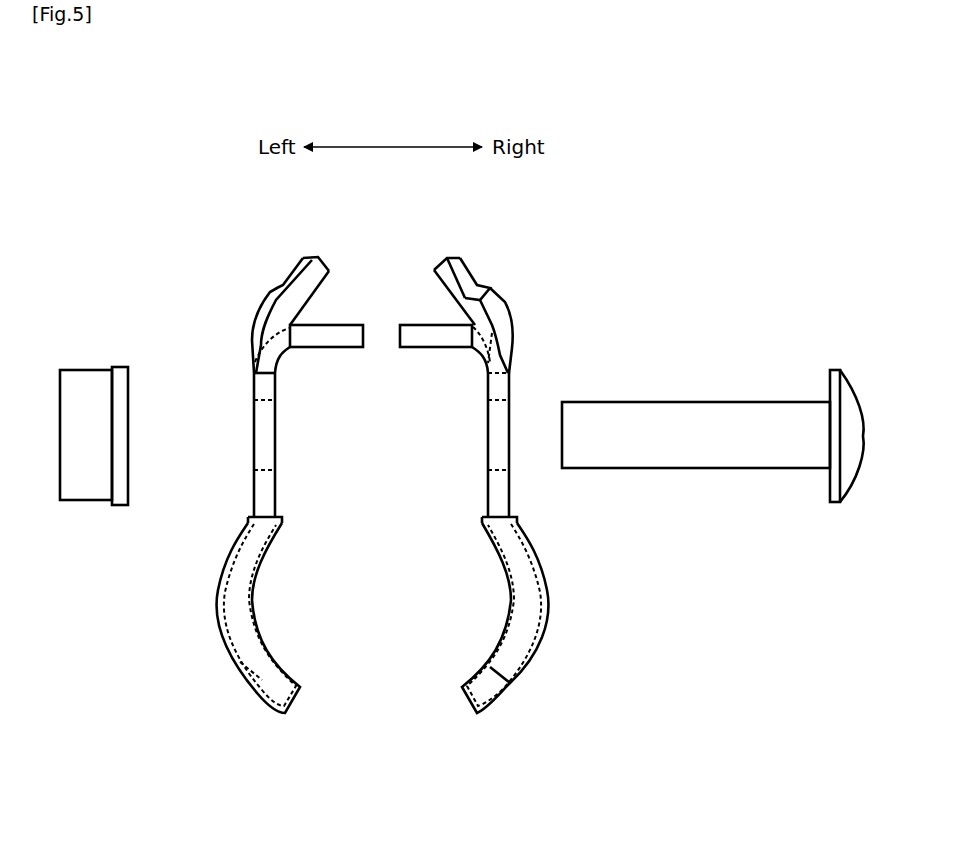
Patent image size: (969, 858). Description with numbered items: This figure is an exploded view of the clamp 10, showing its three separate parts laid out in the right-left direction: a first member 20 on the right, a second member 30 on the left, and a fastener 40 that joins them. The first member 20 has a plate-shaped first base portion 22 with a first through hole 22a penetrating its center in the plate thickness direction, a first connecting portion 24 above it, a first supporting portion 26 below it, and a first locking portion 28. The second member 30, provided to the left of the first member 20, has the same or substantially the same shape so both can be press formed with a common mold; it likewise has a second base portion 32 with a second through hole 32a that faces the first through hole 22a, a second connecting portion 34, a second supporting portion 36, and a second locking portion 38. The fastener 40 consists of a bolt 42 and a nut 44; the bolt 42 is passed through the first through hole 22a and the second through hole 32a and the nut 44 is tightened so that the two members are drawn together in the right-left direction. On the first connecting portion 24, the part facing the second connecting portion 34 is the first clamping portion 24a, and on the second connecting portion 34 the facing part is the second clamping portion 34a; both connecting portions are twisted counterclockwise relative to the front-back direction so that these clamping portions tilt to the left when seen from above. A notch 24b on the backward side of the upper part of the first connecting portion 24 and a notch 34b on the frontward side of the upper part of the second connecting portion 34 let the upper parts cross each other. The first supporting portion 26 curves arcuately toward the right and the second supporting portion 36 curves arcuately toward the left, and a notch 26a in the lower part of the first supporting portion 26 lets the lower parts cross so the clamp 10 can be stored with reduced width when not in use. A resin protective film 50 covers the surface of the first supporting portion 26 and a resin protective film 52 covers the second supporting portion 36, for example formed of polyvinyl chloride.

The clamp 10 is at (148, 118).
The first member 20 is at (522, 262).
The first base portion 22 is at (492, 503).
The first through hole 22a is at (491, 400).
The first connecting portion 24 is at (443, 262).
The first clamping portion 24a is at (490, 308).
The notch 24b is at (480, 280).
The first supporting portion 26 is at (523, 660).
The notch 26a is at (493, 682).
The first locking portion 28 is at (423, 338).
The second member 30 is at (252, 263).
The second base portion 32 is at (268, 503).
The second through hole 32a is at (264, 400).
The second connecting portion 34 is at (320, 270).
The second clamping portion 34a is at (262, 310).
The notch 34b is at (283, 279).
The second supporting portion 36 is at (238, 660).
The second locking portion 38 is at (348, 338).
The fastener 40 is at (95, 355).
The bolt 42 is at (702, 417).
The nut 44 is at (88, 490).
The protective film 50 is at (547, 585).
The protective film 52 is at (216, 585).